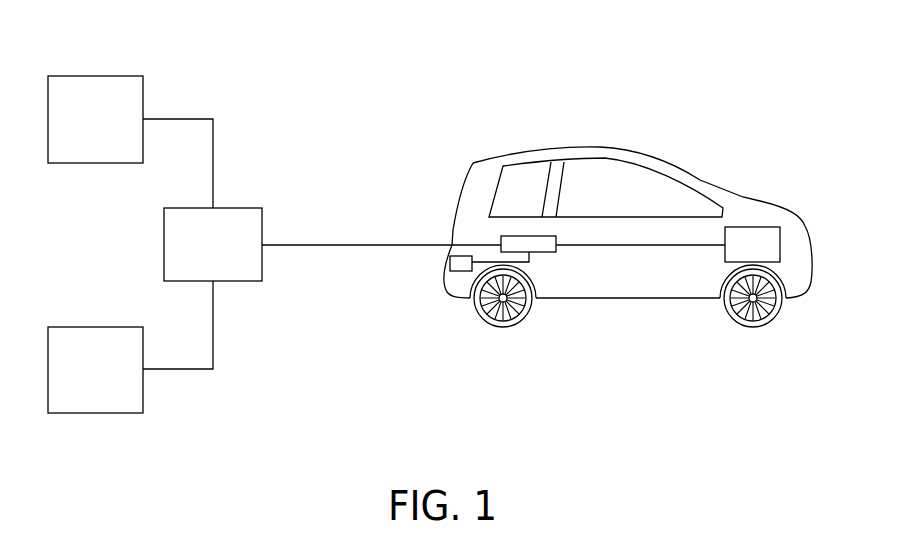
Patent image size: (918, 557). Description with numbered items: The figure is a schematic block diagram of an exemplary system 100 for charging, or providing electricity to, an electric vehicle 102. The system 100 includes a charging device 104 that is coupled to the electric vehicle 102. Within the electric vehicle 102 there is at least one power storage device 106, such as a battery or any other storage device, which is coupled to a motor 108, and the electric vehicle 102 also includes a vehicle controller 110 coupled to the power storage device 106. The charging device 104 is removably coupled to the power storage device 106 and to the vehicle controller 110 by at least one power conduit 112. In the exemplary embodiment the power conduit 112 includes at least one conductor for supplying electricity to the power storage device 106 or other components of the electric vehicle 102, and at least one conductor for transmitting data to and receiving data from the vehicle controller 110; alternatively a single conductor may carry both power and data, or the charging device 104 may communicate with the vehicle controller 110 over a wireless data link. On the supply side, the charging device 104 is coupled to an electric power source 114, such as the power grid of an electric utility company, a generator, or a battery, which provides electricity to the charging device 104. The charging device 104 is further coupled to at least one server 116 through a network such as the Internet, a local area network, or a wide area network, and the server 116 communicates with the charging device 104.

The system 100 is at (458, 60).
The electric vehicle 102 is at (617, 130).
The charging device 104 is at (238, 208).
The power storage device 106 is at (545, 252).
The motor 108 is at (745, 227).
The vehicle controller 110 is at (452, 272).
The power conduit 112 is at (357, 244).
The electric power source 114 is at (95, 327).
The server 116 is at (95, 76).